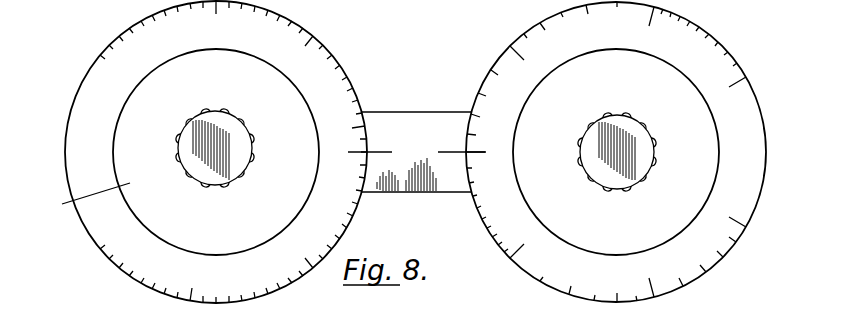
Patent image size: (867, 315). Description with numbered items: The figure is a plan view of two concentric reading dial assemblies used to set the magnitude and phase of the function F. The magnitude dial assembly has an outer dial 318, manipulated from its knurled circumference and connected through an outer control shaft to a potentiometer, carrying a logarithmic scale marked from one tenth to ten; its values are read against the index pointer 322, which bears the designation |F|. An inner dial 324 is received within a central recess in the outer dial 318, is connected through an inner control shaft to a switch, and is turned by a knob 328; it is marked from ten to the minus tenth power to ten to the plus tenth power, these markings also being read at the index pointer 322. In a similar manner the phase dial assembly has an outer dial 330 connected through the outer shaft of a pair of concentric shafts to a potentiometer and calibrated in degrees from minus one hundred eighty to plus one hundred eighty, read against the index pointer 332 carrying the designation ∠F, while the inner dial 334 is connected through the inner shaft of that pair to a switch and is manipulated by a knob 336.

The outer dial 318 is at (747, 105).
The index pointer 322 is at (455, 152).
The inner dial 324 is at (707, 163).
The knob 328 is at (640, 157).
The outer dial 330 is at (79, 88).
The index pointer 332 is at (382, 152).
The inner dial 334 is at (175, 152).
The knob 336 is at (223, 118).